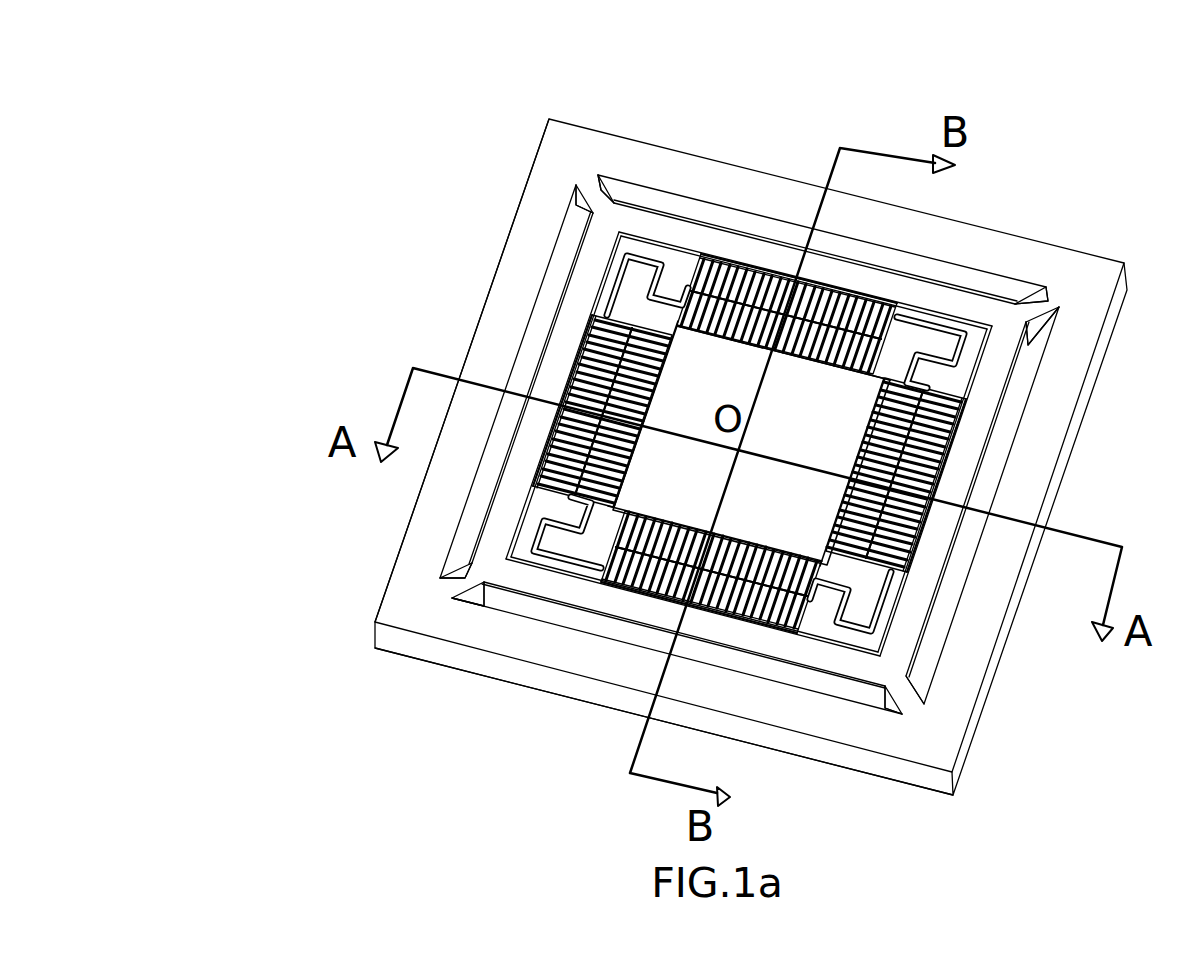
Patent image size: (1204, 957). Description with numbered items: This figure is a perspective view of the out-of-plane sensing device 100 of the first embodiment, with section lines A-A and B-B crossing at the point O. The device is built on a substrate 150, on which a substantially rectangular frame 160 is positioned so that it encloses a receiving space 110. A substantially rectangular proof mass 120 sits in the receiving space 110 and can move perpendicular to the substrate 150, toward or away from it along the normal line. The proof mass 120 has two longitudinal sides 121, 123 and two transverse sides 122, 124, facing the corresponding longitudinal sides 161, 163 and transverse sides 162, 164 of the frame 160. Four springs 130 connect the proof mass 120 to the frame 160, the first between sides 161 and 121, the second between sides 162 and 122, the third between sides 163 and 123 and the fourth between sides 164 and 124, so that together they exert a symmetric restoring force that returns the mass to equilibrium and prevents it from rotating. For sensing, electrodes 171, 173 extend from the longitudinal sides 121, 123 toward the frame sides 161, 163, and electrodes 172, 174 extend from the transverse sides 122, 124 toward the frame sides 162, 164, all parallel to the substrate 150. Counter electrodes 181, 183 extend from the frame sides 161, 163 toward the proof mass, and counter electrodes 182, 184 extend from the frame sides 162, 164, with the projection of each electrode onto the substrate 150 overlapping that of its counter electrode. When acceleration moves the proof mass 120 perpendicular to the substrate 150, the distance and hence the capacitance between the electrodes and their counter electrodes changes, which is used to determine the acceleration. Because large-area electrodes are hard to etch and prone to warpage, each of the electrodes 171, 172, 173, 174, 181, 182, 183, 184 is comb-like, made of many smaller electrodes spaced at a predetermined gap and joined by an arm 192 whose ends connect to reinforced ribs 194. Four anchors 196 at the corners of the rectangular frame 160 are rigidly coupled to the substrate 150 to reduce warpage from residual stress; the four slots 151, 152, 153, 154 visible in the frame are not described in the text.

The out-of-plane sensing device 100 is at (222, 118).
The receiving space 110 is at (825, 645).
The proof mass 120 is at (697, 372).
The longitudinal side of the proof mass 121 is at (772, 645).
The transverse side of the proof mass 122 is at (618, 272).
The longitudinal side of the proof mass 123 is at (707, 257).
The transverse side of the proof mass 124 is at (958, 437).
The spring 130 is at (636, 262).
The substrate 150 is at (810, 197).
The bottom slot 151 is at (627, 703).
The left slot 152 is at (417, 488).
The top slot 153 is at (690, 257).
The right slot 154 is at (970, 737).
The frame 160 is at (590, 255).
The longitudinal side of the frame 161 is at (535, 582).
The transverse side of the frame 162 is at (545, 292).
The longitudinal side of the frame 163 is at (750, 253).
The transverse side of the frame 164 is at (980, 410).
The electrode 171 is at (633, 592).
The electrode 172 is at (572, 262).
The electrode 173 is at (830, 295).
The electrode 174 is at (945, 485).
The counter electrode 181 is at (600, 585).
The counter electrode 182 is at (585, 345).
The counter electrode 183 is at (868, 305).
The counter electrode 184 is at (960, 470).
The arm 192 is at (555, 360).
The reinforced rib 194 is at (717, 257).
The anchor 196 is at (617, 177).